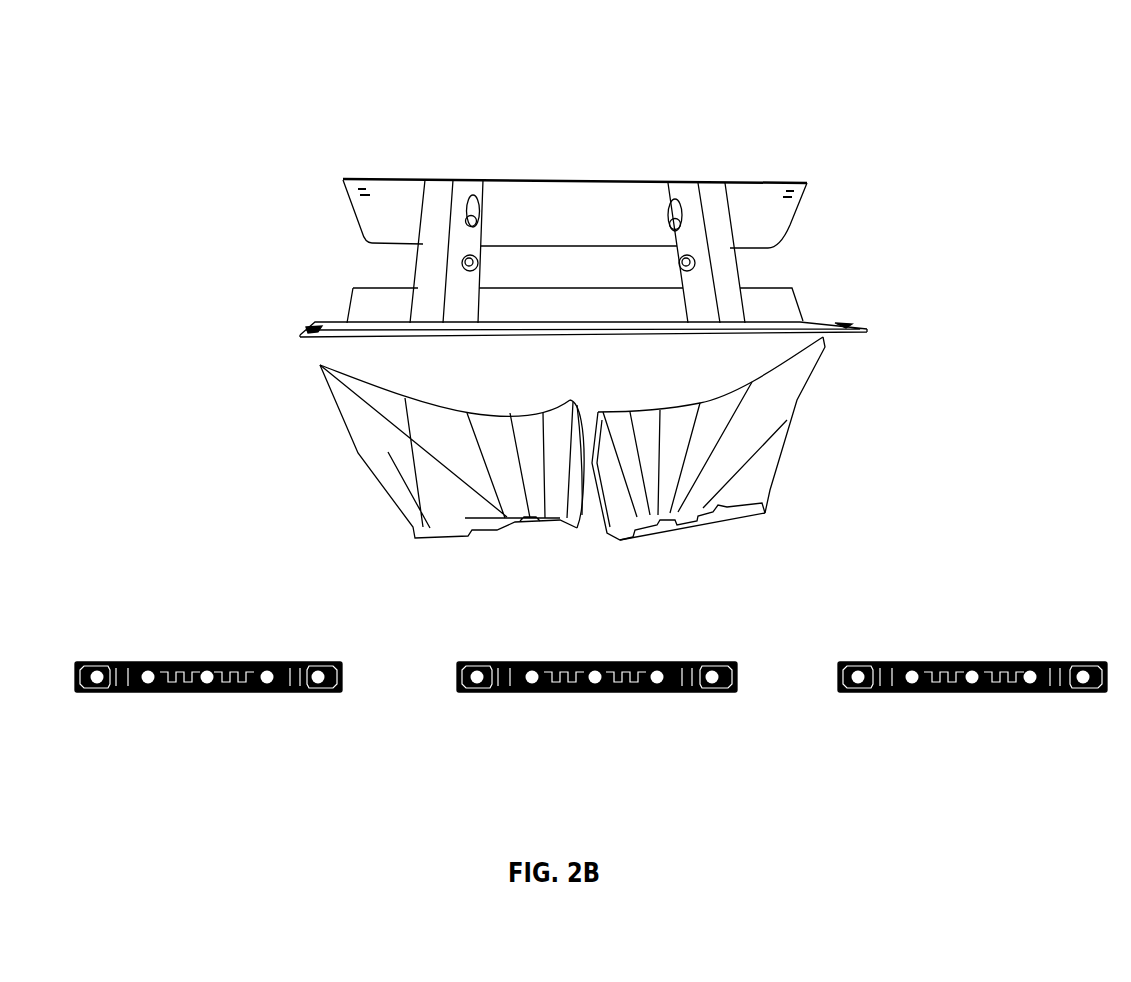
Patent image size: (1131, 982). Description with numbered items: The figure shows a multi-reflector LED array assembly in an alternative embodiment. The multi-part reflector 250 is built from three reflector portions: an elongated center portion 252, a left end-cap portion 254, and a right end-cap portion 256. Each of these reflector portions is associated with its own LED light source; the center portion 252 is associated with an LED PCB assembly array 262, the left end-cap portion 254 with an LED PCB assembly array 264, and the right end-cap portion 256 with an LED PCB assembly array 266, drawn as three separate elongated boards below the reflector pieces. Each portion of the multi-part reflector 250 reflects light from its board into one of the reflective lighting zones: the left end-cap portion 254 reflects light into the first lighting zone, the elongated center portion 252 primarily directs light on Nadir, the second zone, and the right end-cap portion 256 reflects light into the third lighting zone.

The multi-part reflector 250 is at (591, 369).
The elongated center portion 252 is at (713, 200).
The left end-cap portion 254 is at (365, 425).
The right end-cap portion 256 is at (713, 430).
The LED PCB assembly array 262 is at (597, 688).
The LED PCB assembly array 264 is at (208, 688).
The LED PCB assembly array 266 is at (972, 688).